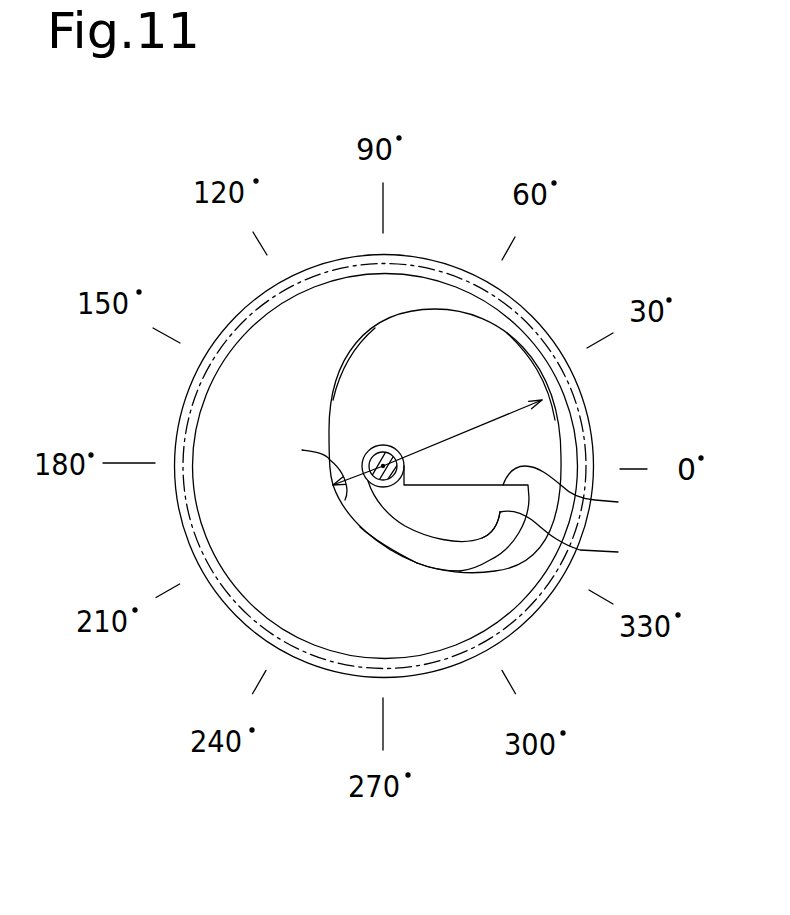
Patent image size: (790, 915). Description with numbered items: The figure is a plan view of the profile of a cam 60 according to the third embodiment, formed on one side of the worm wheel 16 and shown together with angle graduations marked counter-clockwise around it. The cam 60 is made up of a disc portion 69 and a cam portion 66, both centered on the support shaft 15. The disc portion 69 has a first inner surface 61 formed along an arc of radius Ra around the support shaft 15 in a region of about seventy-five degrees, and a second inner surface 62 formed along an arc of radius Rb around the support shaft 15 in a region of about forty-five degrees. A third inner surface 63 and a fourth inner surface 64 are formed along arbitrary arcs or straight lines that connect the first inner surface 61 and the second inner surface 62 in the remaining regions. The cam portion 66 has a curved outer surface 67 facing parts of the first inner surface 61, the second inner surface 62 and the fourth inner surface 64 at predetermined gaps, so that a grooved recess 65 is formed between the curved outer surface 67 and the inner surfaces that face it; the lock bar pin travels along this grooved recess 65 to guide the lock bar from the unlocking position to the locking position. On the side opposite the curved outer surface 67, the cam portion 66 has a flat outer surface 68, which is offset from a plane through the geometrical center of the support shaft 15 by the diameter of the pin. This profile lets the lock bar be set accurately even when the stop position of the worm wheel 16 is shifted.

The support shaft 15 is at (382, 445).
The worm wheel 16 is at (184, 404).
The cam 60 is at (440, 333).
The first inner surface 61 is at (512, 344).
The second inner surface 62 is at (348, 499).
The third inner surface 63 is at (344, 370).
The fourth inner surface 64 is at (407, 560).
The grooved recess 65 is at (448, 555).
The cam portion 66 is at (579, 540).
The curved outer surface 67 is at (487, 540).
The flat outer surface 68 is at (581, 490).
The disc portion 69 is at (256, 338).
The radius Ra is at (470, 430).
The radius Rb is at (325, 453).